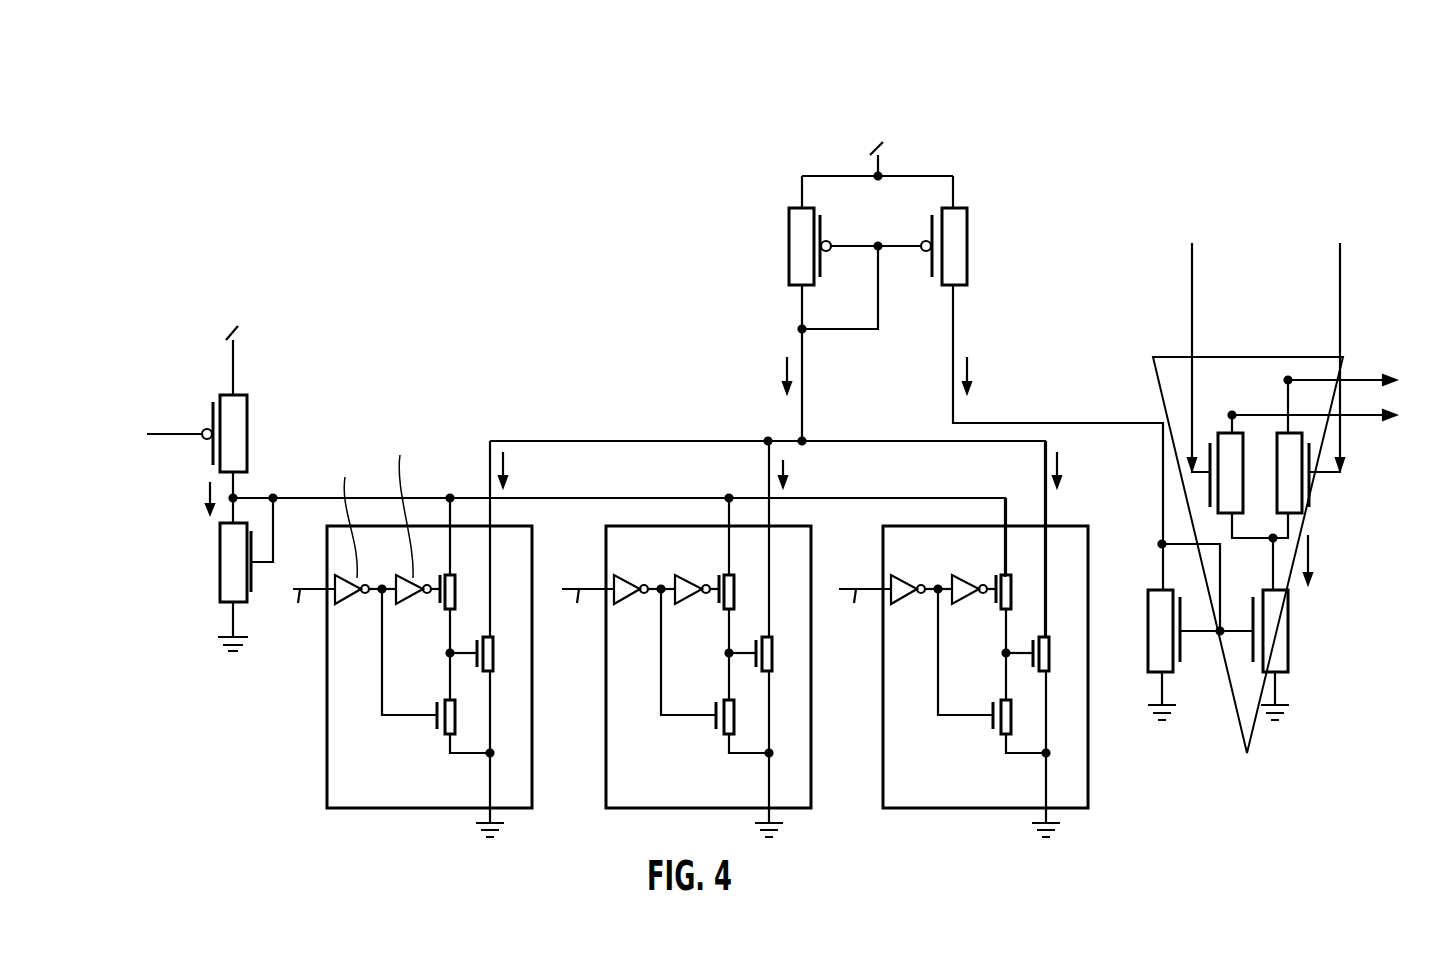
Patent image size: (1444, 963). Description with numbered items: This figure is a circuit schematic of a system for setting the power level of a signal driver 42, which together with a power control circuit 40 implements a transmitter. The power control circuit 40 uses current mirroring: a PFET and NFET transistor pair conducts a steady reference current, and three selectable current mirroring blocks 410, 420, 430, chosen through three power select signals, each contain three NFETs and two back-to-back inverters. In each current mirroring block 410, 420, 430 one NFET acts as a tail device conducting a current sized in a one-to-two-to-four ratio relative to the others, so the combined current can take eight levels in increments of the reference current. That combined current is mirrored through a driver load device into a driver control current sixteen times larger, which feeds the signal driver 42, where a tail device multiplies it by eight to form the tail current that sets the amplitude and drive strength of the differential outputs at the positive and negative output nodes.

The power control circuit 40 is at (1176, 116).
The signal driver 42 is at (1250, 737).
The current mirroring block 410 is at (347, 808).
The current mirroring block 420 is at (625, 808).
The current mirroring block 430 is at (900, 808).